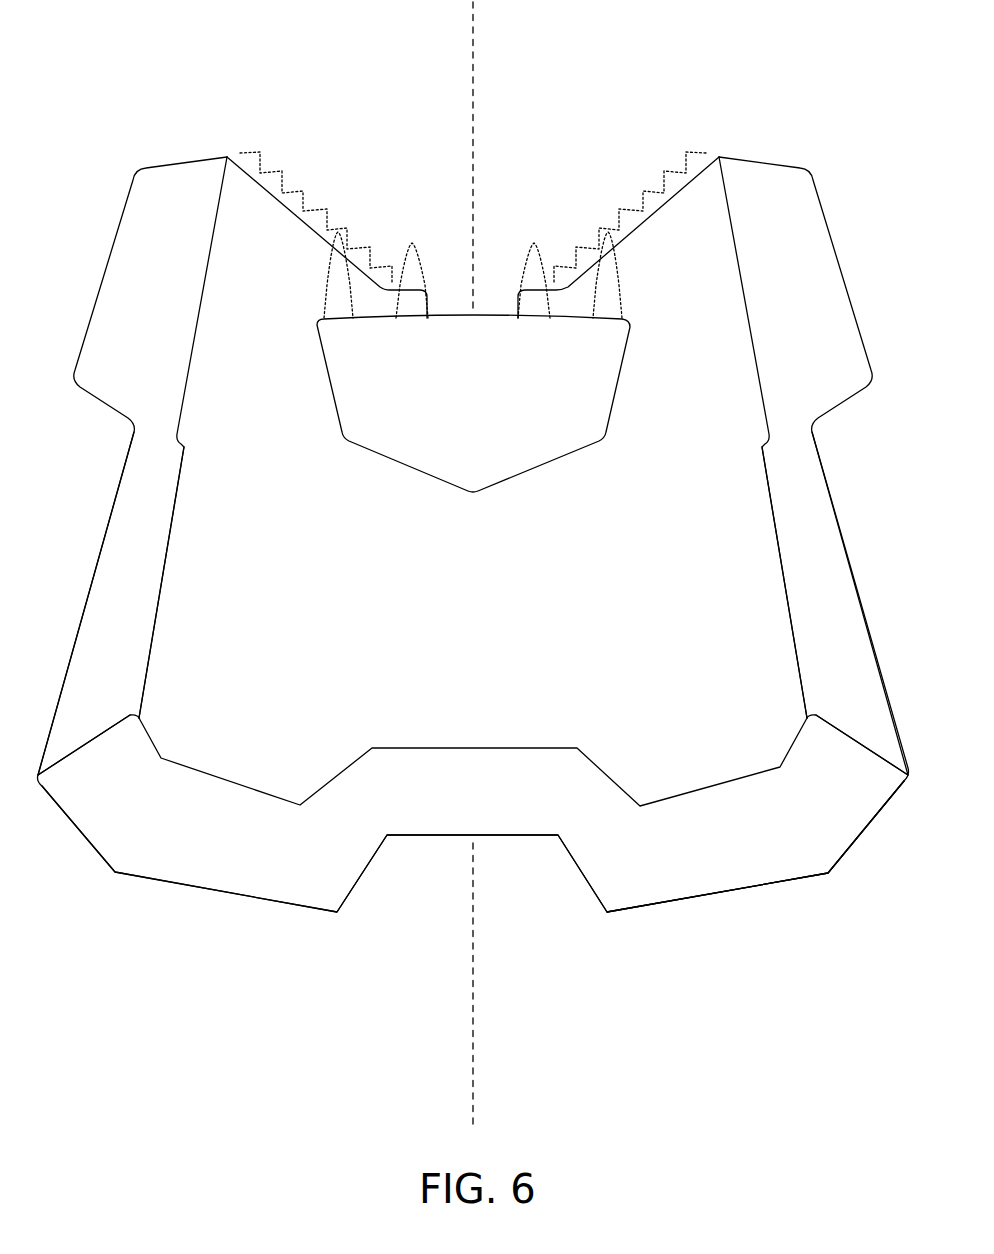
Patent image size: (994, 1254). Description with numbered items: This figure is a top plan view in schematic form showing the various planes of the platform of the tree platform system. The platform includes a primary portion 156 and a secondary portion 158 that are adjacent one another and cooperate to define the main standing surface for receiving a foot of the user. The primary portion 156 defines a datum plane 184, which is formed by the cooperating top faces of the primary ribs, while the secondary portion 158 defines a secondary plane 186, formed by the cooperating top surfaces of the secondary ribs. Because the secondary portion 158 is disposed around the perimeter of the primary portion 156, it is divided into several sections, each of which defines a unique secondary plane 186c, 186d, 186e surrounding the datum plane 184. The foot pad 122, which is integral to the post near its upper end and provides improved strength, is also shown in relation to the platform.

The foot pad 122 is at (489, 317).
The primary portion 156 is at (737, 520).
The secondary portion 158 is at (718, 868).
The datum plane 184 is at (490, 561).
The secondary plane 186 is at (165, 930).
The secondary plane 186c is at (232, 840).
The secondary plane 186d is at (135, 656).
The secondary plane 186e is at (853, 656).